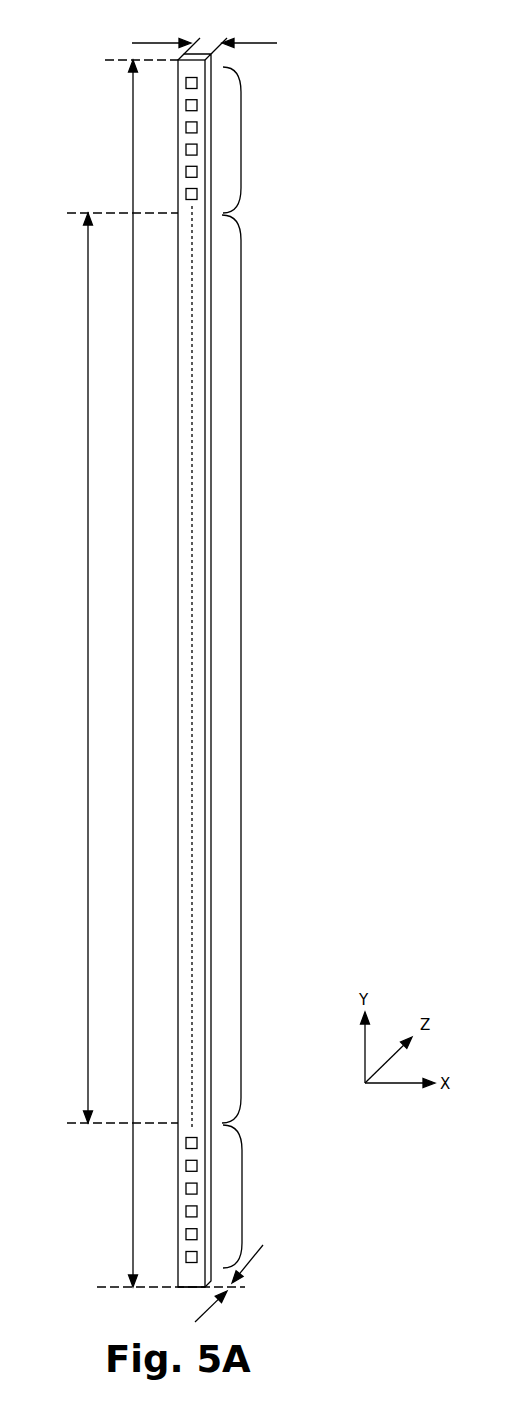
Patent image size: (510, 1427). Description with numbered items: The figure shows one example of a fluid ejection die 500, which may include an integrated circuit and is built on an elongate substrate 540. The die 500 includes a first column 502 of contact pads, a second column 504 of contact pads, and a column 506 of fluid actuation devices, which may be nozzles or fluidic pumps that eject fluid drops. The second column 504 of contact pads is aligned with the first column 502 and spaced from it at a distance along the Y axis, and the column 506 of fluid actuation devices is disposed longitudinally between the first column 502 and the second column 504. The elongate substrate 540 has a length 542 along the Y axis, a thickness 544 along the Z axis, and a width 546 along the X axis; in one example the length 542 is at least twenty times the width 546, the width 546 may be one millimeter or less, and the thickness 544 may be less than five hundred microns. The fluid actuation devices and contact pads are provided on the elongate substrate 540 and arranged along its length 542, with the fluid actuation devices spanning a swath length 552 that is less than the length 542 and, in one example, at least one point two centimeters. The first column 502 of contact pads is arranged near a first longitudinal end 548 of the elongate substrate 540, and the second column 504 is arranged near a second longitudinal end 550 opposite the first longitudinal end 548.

The fluid ejection die 500 is at (328, 56).
The first column of contact pads 502 is at (241, 138).
The second column of contact pads 504 is at (242, 1198).
The column of fluid actuation devices 506 is at (241, 668).
The elongate substrate 540 is at (178, 756).
The length 542 is at (133, 617).
The thickness 544 is at (252, 1258).
The width 546 is at (260, 43).
The first longitudinal end 548 is at (196, 42).
The second longitudinal end 550 is at (193, 1288).
The swath length 552 is at (88, 882).